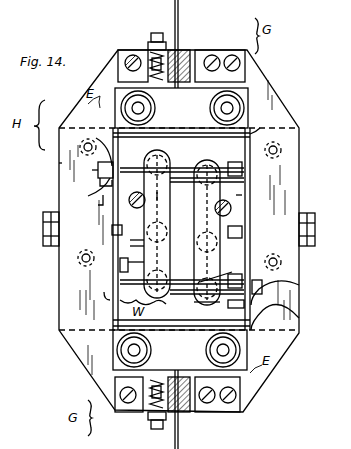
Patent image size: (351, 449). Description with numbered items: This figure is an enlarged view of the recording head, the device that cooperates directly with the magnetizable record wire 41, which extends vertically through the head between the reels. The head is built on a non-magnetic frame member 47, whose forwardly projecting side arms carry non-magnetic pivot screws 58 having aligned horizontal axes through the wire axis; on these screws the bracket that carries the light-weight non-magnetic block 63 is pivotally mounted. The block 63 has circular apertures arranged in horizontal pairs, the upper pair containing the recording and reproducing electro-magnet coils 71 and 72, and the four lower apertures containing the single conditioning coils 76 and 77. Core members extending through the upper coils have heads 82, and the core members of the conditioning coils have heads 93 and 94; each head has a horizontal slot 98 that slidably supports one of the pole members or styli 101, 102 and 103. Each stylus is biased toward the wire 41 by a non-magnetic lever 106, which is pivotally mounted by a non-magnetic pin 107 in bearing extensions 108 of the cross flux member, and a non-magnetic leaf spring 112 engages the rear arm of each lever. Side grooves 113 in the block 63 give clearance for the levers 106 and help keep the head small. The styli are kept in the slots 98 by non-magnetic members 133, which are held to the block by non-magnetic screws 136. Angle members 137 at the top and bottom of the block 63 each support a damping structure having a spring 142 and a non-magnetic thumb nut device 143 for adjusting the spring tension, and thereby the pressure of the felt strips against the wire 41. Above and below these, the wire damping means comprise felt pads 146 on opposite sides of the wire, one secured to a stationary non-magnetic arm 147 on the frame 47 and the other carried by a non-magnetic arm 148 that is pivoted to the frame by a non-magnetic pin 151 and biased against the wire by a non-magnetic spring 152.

The wire 41 is at (179, 32).
The non-magnetic frame member 47 is at (59, 162).
The pivot screws 58 is at (43, 232).
The block 63 is at (265, 150).
The electro-magnet coils 71 is at (175, 167).
The electro-magnet coils 72 is at (157, 224).
The coils 76 is at (136, 209).
The coils 77 is at (203, 306).
The head 82 is at (218, 172).
The head 93 is at (158, 197).
The head 94 is at (136, 247).
The horizontal slot 98 is at (180, 229).
The stylus 101 is at (135, 166).
The stylus 102 is at (114, 230).
The stylus 103 is at (146, 268).
The non-magnetic lever 106 is at (104, 186).
The non-magnetic pin 107 is at (95, 142).
The bearing extensions 108 is at (100, 167).
The non-magnetic leaf spring 112 is at (98, 170).
The side grooves 113 is at (240, 204).
The non-magnetic members 133 is at (126, 264).
The non-magnetic screws 136 is at (104, 200).
The angle members 137 is at (252, 134).
The spring 142 is at (116, 90).
The thumb nut device 143 is at (209, 106).
The felt pads 146 is at (200, 50).
The stationary non-magnetic arm 147 is at (199, 50).
The non-magnetic arm 148 is at (158, 33).
The non-magnetic pin 151 is at (150, 38).
The non-magnetic spring 152 is at (150, 52).